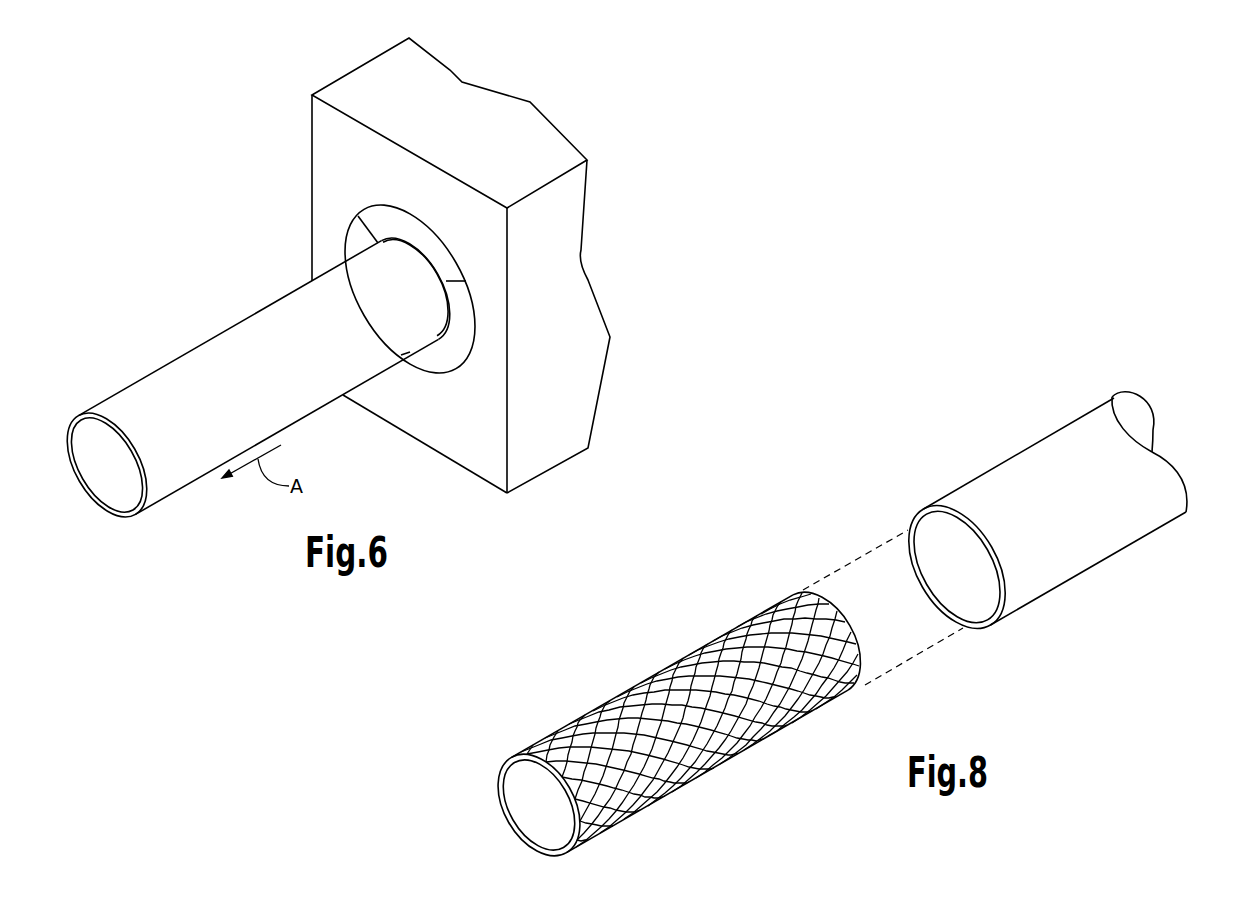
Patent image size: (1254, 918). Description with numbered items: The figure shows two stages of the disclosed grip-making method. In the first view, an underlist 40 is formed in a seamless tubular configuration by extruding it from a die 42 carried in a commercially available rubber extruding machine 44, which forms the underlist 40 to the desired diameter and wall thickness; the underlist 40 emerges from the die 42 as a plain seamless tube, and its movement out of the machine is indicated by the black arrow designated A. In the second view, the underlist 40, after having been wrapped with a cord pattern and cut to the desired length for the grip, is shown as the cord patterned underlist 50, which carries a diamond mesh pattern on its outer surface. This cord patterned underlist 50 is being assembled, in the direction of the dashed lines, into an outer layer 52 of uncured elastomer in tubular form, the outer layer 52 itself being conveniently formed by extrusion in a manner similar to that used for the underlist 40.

In FIG. 6, the underlist 40 is at (167, 494).
In FIG. 6, the die 42 is at (346, 240).
In FIG. 6, the rubber extruding machine 44 is at (351, 74).
In FIG. 8, the cord patterned underlist 50 is at (652, 658).
In FIG. 8, the outer layer 52 is at (1013, 456).